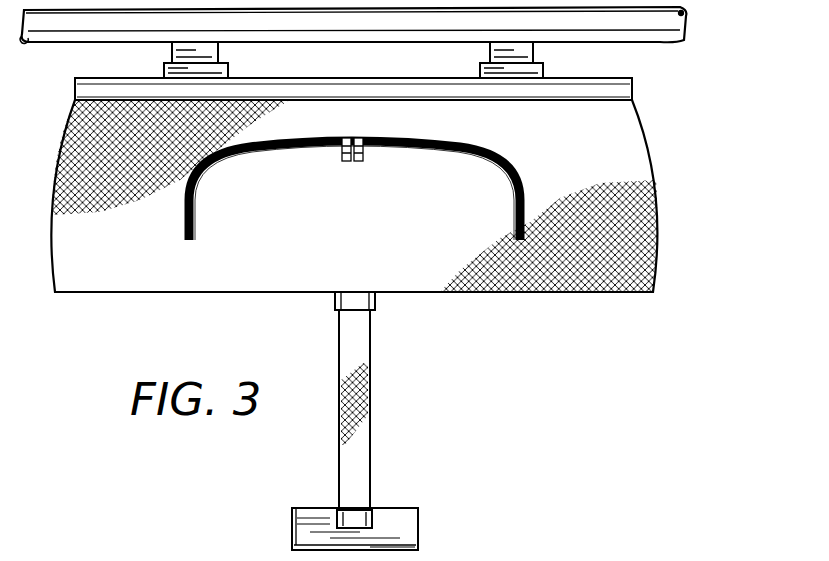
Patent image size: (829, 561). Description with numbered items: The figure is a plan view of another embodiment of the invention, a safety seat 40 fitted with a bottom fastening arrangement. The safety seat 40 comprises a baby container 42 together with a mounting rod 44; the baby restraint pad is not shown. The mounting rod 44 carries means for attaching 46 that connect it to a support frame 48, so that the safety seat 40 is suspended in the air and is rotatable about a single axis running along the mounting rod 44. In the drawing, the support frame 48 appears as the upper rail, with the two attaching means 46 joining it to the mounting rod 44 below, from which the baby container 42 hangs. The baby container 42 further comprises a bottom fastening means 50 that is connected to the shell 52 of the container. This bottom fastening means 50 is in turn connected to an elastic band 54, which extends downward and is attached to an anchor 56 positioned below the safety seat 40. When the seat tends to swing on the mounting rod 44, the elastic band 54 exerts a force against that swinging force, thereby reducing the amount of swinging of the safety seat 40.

The safety seat 40 is at (717, 170).
The baby container 42 is at (658, 240).
The mounting rod 44 is at (633, 87).
The means for attaching 46 is at (203, 55).
The support frame 48 is at (658, 38).
The bottom fastening means 50 is at (336, 311).
The shell 52 is at (555, 292).
The elastic band 54 is at (365, 432).
The anchor 56 is at (410, 520).